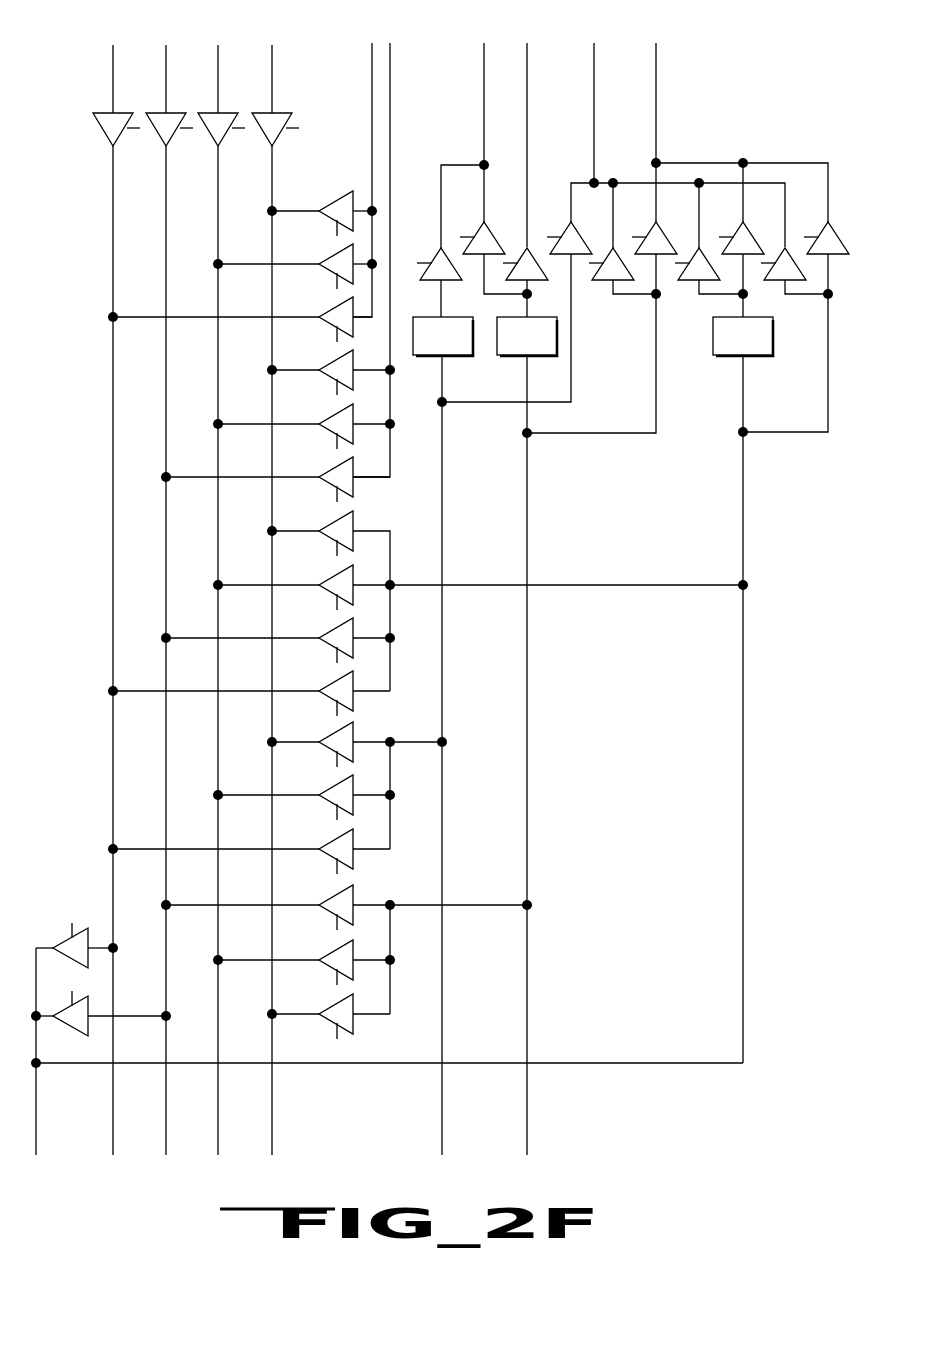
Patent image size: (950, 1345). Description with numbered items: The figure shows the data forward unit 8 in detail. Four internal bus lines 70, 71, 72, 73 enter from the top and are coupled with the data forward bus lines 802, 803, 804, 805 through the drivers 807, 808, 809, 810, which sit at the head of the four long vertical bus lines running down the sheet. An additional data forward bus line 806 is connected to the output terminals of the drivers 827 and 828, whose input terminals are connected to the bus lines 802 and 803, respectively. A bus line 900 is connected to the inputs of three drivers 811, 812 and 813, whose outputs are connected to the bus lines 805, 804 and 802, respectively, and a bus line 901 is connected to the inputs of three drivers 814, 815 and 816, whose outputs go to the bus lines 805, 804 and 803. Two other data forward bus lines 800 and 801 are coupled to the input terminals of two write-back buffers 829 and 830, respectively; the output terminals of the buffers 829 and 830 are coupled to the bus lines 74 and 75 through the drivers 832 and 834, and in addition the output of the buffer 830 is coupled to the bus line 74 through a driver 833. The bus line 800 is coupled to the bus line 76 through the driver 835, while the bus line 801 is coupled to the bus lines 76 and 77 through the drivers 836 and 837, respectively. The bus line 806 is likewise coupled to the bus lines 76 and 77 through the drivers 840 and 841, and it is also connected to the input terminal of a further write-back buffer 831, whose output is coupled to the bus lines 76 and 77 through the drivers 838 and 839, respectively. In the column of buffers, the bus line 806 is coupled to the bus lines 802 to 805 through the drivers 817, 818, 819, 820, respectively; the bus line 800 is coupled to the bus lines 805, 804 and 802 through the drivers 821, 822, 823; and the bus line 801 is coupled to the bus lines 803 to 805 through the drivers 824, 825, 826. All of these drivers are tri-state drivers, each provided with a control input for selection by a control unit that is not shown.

The data forward unit 8 is at (82, 524).
The internal bus line 70 is at (113, 57).
The internal bus line 71 is at (166, 57).
The internal bus line 72 is at (218, 57).
The internal bus line 73 is at (272, 57).
The bus line 74 is at (484, 57).
The bus line 75 is at (527, 57).
The bus line 76 is at (594, 57).
The bus line 77 is at (656, 57).
The bus line 900 is at (372, 60).
The bus line 901 is at (390, 60).
The data forward bus line 800 is at (442, 1137).
The data forward bus line 801 is at (527, 1137).
The data forward bus line 802 is at (113, 1137).
The data forward bus line 803 is at (166, 1137).
The data forward bus line 804 is at (218, 1137).
The data forward bus line 805 is at (272, 1137).
The additional data forward bus line 806 is at (36, 1137).
The driver 807 is at (103, 133).
The driver 808 is at (156, 133).
The driver 809 is at (208, 133).
The driver 810 is at (262, 133).
The driver 811 is at (335, 198).
The driver 812 is at (335, 251).
The driver 813 is at (335, 304).
The driver 814 is at (335, 357).
The driver 815 is at (335, 411).
The driver 816 is at (335, 464).
The driver 817 is at (335, 518).
The driver 818 is at (335, 572).
The driver 819 is at (335, 625).
The driver 820 is at (335, 678).
The driver 821 is at (335, 729).
The driver 822 is at (335, 782).
The driver 823 is at (335, 836).
The driver 824 is at (335, 892).
The driver 825 is at (335, 947).
The driver 826 is at (335, 1001).
The driver 827 is at (63, 942).
The driver 828 is at (63, 1010).
The write-back buffer 829 is at (458, 357).
The write-back buffer 830 is at (541, 357).
The write-back buffer 831 is at (756, 357).
The driver 832 is at (433, 253).
The driver 833 is at (474, 235).
The driver 834 is at (520, 255).
The driver 835 is at (565, 235).
The driver 836 is at (605, 262).
The driver 837 is at (652, 240).
The driver 838 is at (694, 262).
The driver 839 is at (738, 240).
The driver 840 is at (780, 262).
The driver 841 is at (825, 240).